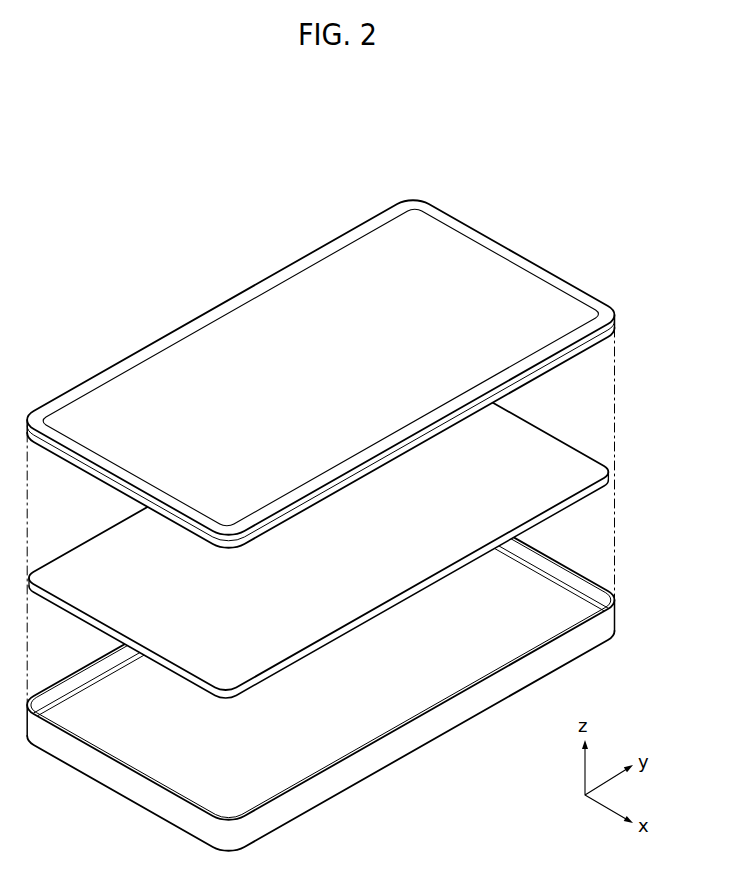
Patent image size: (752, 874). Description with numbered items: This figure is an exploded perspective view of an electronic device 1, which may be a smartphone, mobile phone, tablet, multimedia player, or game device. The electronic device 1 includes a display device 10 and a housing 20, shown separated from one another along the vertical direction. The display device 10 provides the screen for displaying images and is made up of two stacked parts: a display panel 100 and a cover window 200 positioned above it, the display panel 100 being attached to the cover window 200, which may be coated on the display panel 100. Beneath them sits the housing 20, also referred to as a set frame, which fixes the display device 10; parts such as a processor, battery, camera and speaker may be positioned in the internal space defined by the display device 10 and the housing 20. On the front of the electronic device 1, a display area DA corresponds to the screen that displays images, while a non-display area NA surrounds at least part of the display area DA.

The electronic device 1 is at (372, 520).
The display device 10 is at (372, 444).
The housing 20 is at (408, 737).
The display panel 100 is at (609, 472).
The cover window 200 is at (351, 369).
The display area DA is at (347, 266).
The non-display area NA is at (503, 254).